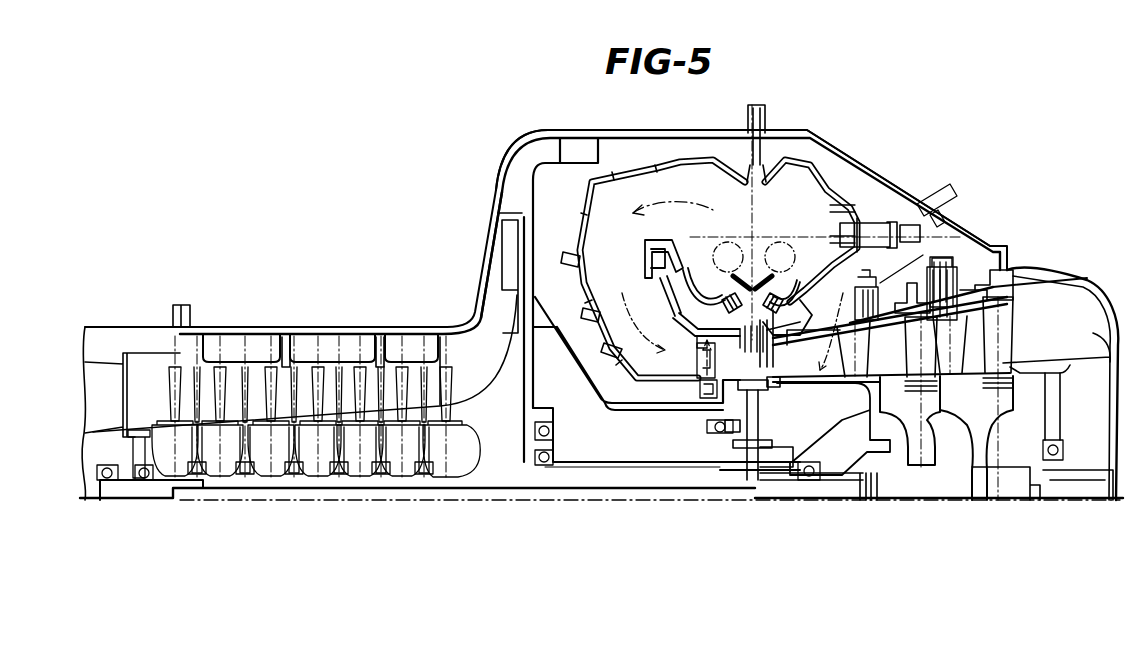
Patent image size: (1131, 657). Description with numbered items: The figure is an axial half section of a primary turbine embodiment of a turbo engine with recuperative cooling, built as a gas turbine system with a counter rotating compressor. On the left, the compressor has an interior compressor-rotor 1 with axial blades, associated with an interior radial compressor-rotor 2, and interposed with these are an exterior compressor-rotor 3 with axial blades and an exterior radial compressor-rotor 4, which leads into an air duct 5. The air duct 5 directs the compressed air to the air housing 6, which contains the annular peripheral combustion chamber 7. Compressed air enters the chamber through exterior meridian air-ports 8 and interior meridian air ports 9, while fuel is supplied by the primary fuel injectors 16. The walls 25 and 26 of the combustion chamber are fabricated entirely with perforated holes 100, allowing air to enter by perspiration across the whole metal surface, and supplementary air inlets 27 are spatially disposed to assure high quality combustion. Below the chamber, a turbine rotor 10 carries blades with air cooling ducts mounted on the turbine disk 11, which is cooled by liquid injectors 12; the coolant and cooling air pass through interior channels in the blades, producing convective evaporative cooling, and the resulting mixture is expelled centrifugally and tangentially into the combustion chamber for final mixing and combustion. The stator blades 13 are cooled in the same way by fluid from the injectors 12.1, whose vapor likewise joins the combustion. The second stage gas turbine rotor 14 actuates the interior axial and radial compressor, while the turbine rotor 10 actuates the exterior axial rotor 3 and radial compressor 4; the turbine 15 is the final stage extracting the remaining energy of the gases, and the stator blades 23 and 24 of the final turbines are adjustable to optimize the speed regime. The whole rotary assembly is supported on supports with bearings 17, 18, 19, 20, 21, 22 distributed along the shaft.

The interior compressor-rotor 1 is at (195, 470).
The interior radial compressor-rotor 2 is at (490, 468).
The exterior compressor-rotor 3 is at (236, 362).
The exterior radial compressor-rotor 4 is at (497, 275).
The air duct 5 is at (548, 145).
The air housing 6 is at (800, 158).
The annular peripheral combustion chamber 7 is at (700, 185).
The exterior meridian air-ports 8 is at (745, 150).
The interior meridian air ports 9 is at (795, 295).
The turbine rotor 10 is at (780, 360).
The turbine disk 11 is at (742, 445).
The liquid injectors 12 is at (715, 428).
The injectors 12.1 is at (695, 392).
The stator blades 13 is at (697, 365).
The second stage gas turbine rotor 14 is at (910, 455).
The turbine 15 is at (985, 452).
The primary fuel injectors 16 is at (870, 220).
The bearing 17 is at (1058, 460).
The bearing 18 is at (805, 480).
The bearing 19 is at (545, 465).
The bearing 20 is at (553, 431).
The bearing 21 is at (145, 480).
The bearing 22 is at (97, 473).
The adjustable stator blades 23 is at (947, 225).
The adjustable stator blades 24 is at (1055, 373).
The combustion chamber wall 25 is at (628, 187).
The combustion chamber wall 26 is at (676, 250).
The supplementary air inlets 27 is at (590, 262).
The perforated holes 100 is at (702, 260).